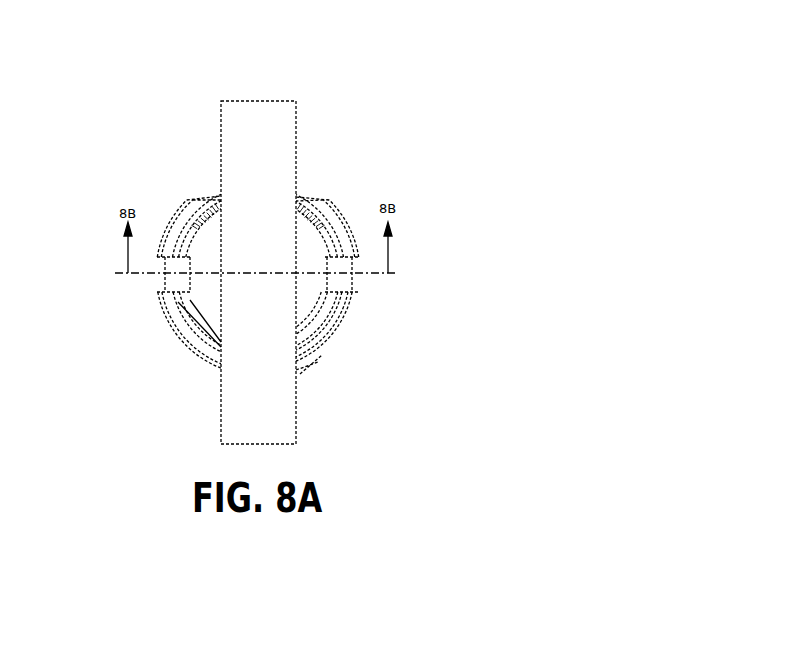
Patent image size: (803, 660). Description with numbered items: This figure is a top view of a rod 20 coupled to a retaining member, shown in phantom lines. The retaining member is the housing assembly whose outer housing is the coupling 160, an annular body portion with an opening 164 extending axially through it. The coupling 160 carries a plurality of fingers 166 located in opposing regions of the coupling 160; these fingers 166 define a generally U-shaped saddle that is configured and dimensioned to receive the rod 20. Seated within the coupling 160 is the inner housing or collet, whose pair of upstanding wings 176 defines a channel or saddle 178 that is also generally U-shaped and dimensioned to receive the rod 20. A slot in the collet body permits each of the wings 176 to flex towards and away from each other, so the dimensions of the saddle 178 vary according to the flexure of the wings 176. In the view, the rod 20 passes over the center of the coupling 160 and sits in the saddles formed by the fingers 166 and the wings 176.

The rod 20 is at (258, 137).
The coupling 160 is at (340, 205).
The opening 164 is at (316, 222).
The fingers 166 is at (340, 245).
The upstanding wings 176 is at (318, 300).
The saddle 178 is at (322, 343).